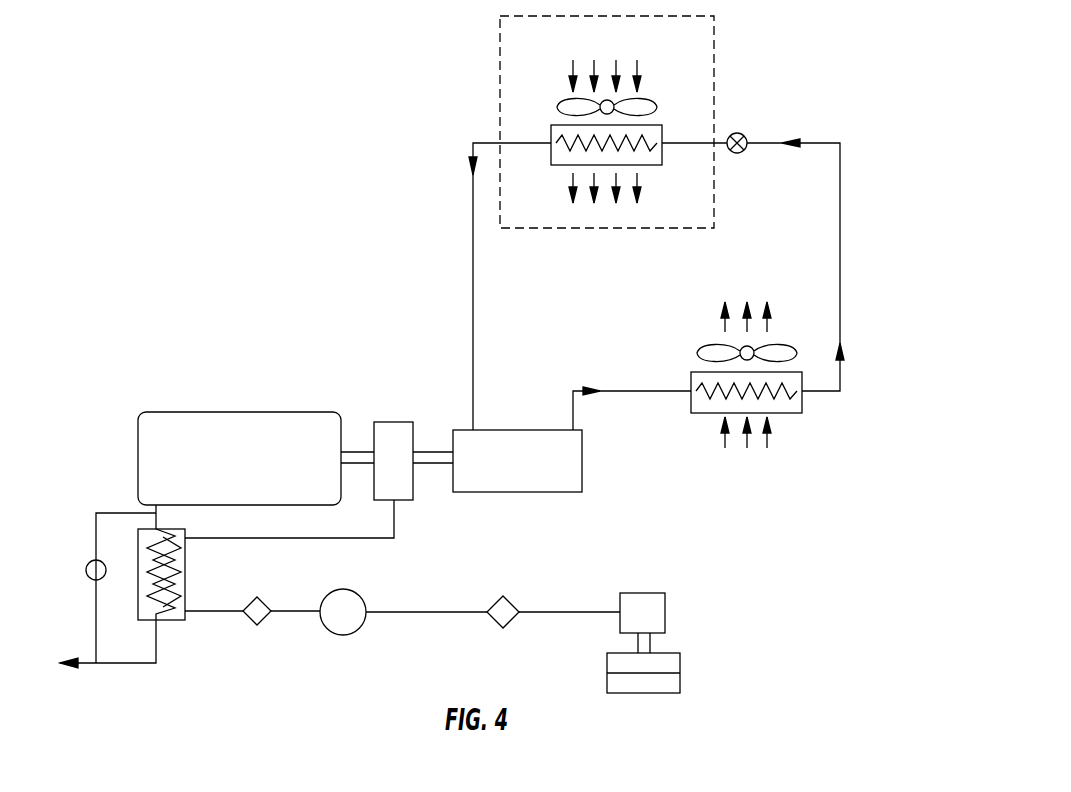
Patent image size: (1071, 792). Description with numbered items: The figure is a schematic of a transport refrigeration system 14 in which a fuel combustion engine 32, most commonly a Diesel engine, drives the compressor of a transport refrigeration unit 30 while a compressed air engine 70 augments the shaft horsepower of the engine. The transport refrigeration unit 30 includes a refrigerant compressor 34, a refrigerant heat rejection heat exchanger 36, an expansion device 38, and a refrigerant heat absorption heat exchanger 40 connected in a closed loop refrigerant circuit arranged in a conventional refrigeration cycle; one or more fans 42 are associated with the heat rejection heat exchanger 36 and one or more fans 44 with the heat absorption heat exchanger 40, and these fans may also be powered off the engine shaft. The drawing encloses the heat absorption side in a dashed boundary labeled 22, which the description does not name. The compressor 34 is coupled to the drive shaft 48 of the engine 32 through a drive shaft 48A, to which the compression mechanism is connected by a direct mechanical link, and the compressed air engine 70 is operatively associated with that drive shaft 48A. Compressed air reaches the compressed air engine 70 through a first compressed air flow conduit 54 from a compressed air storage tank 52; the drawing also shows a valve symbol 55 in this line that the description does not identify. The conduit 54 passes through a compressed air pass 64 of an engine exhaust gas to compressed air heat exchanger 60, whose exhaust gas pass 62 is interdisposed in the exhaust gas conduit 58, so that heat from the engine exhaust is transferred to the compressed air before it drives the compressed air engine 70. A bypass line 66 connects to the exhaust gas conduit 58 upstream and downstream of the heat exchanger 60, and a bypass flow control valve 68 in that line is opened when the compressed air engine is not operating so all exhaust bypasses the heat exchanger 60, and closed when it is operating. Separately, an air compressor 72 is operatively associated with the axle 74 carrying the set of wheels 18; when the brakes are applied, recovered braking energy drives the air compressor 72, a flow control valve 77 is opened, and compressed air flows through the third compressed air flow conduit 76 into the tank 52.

The transport refrigeration system 14 is at (170, 372).
The set of wheels 18 is at (655, 693).
The HVAC module 22 is at (536, 52).
The transport refrigeration unit 30 is at (792, 78).
The fuel combustion engine 32 is at (263, 412).
The refrigerant compressor 34 is at (582, 460).
The refrigerant heat rejection heat exchanger 36 is at (802, 400).
The expansion device 38 is at (745, 133).
The refrigerant heat absorption heat exchanger 40 is at (655, 165).
The fans 42 is at (778, 345).
The fans 44 is at (648, 100).
The drive shaft 48 is at (357, 450).
The drive shaft 48A is at (437, 465).
The compressed air storage tank 52 is at (337, 590).
The first compressed air flow conduit 54 is at (313, 538).
The valve 55 is at (248, 600).
The exhaust gas conduit 58 is at (158, 520).
The engine exhaust gas to compressed air heat exchanger 60 is at (170, 622).
The exhaust gas pass 62 is at (150, 612).
The compressed air pass 64 is at (180, 592).
The bypass line 66 is at (95, 537).
The bypass flow control valve 68 is at (88, 578).
The compressed air engine 70 is at (400, 422).
The air compressor 72 is at (657, 593).
The axle 74 is at (650, 645).
The third compressed air flow conduit 76 is at (558, 612).
The flow control valve 77 is at (512, 622).